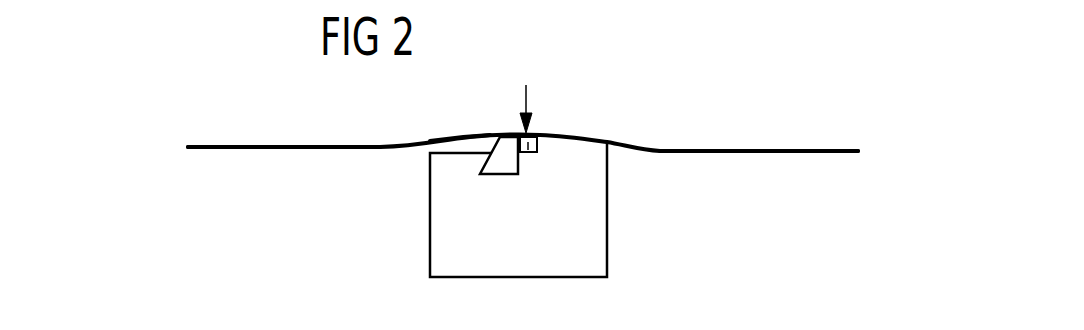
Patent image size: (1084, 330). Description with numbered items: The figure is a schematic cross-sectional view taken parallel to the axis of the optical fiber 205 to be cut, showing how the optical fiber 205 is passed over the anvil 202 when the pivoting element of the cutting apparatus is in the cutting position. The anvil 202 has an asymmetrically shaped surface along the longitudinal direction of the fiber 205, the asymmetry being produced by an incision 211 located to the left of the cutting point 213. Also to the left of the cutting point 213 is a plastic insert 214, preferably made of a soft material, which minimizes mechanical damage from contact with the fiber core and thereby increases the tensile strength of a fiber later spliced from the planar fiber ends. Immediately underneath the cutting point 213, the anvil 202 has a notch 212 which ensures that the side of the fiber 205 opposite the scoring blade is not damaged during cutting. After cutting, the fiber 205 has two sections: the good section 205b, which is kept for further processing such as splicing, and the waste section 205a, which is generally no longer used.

The anvil 202 is at (592, 240).
The optical fiber 205 is at (188, 148).
The waste section 205a is at (772, 149).
The good section 205b is at (275, 146).
The incision 211 is at (462, 151).
The notch 212 is at (528, 152).
The cutting point 213 is at (527, 100).
The plastic insert 214 is at (500, 162).